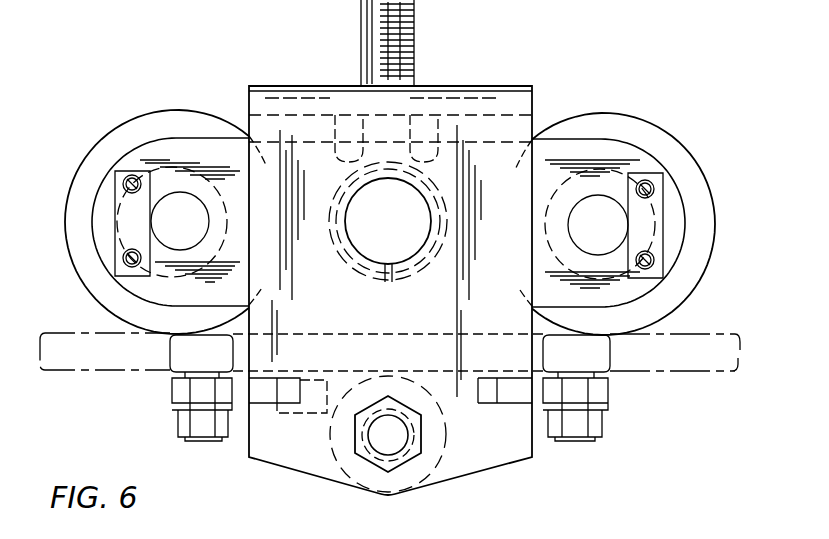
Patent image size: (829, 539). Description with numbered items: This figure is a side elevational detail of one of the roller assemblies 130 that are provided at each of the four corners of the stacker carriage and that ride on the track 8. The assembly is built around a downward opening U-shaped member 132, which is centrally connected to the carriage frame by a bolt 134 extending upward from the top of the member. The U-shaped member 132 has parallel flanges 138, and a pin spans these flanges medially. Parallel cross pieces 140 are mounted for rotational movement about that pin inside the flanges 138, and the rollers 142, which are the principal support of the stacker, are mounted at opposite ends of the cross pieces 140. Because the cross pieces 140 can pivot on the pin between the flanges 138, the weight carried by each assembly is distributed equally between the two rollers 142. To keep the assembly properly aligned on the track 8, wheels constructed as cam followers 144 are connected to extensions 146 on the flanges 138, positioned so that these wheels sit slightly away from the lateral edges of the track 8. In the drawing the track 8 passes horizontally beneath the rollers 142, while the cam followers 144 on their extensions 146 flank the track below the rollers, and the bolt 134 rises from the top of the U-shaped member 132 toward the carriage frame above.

The track 8 is at (732, 367).
The roller assembly 130 is at (281, 70).
The U-shaped member 132 is at (503, 88).
The bolt 134 is at (416, 45).
The flanges 138 is at (520, 130).
The cross pieces 140 is at (207, 150).
The rollers 142 is at (156, 118).
The cam followers 144 is at (600, 360).
The extensions 146 is at (515, 395).